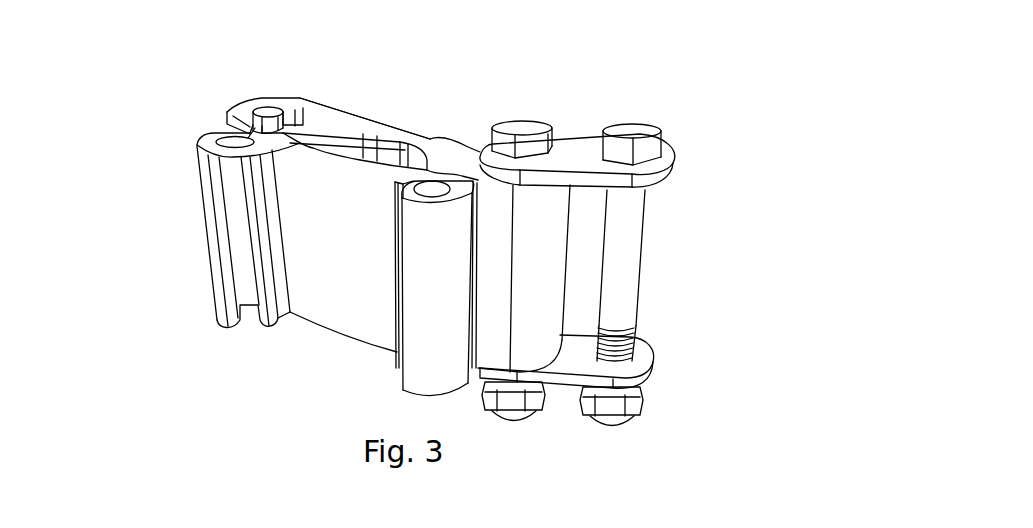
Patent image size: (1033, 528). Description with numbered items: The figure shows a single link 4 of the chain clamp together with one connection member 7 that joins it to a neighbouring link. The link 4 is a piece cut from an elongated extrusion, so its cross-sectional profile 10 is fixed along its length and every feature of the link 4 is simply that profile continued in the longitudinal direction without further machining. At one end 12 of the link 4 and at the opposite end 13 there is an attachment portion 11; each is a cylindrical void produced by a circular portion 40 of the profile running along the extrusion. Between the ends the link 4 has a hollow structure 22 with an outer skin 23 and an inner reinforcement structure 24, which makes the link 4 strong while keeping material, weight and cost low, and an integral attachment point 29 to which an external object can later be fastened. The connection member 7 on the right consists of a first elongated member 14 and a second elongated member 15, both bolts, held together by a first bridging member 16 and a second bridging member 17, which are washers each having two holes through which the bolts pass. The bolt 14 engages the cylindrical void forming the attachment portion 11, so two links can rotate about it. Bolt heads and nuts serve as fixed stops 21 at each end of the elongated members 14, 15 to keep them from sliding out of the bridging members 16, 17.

The link 4 is at (306, 347).
The connection member 7 is at (683, 107).
The cross-sectional profile 10 is at (303, 78).
The attachment portion 11 is at (262, 108).
The end of the link 12 is at (207, 120).
The opposite end of the link 13 is at (535, 313).
The first elongated member 14 is at (526, 130).
The second elongated member 15 is at (640, 216).
The first bridging member 16 is at (579, 148).
The second bridging member 17 is at (645, 355).
The fixed stop 21 is at (652, 153).
The hollow structure 22 is at (348, 100).
The outer skin 23 is at (382, 133).
The inner reinforcement structure 24 is at (423, 156).
The attachment point 29 is at (212, 190).
The circular portion 40 is at (260, 120).